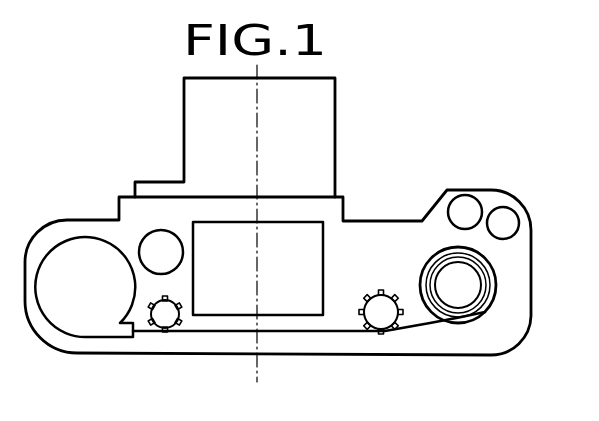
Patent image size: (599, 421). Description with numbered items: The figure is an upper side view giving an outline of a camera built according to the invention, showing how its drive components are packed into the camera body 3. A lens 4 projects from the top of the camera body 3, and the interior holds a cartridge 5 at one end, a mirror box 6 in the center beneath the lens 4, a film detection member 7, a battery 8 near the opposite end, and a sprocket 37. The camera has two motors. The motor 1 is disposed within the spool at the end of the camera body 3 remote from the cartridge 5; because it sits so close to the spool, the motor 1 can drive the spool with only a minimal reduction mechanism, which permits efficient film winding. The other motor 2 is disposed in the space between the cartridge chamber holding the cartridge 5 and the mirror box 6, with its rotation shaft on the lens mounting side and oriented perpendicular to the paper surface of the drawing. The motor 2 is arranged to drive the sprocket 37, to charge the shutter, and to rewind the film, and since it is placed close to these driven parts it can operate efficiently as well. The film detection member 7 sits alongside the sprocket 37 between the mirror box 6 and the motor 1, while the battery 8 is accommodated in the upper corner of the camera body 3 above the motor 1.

The motor 1 is at (478, 284).
The motor 2 is at (160, 229).
The camera body 3 is at (388, 226).
The lens 4 is at (323, 108).
The cartridge 5 is at (87, 247).
The mirror box 6 is at (324, 258).
The film detection member 7 is at (375, 301).
The battery 8 is at (504, 219).
The sprocket 37 is at (160, 323).